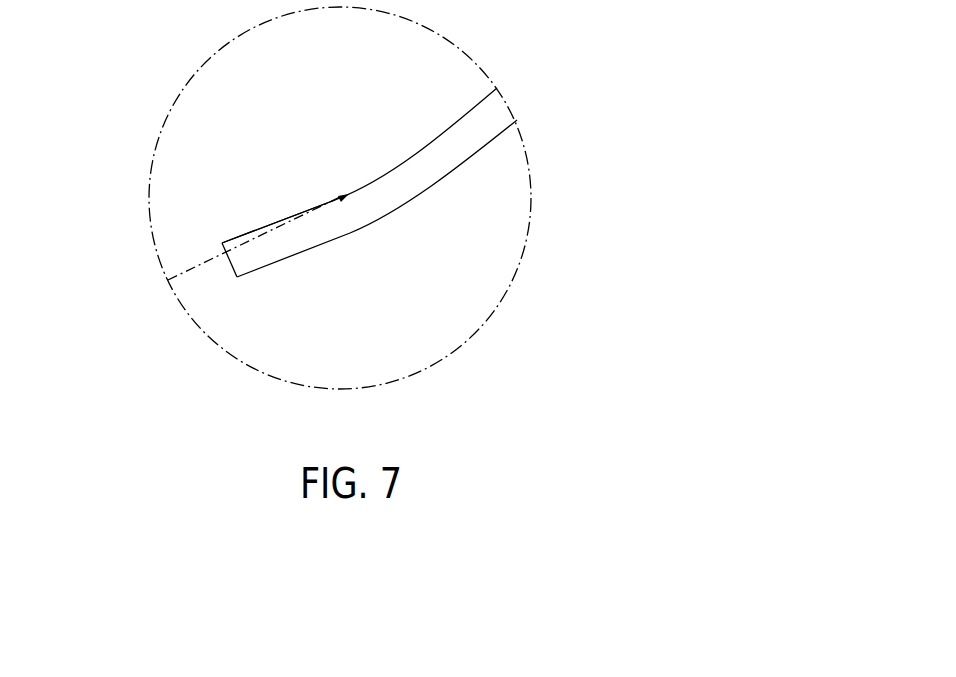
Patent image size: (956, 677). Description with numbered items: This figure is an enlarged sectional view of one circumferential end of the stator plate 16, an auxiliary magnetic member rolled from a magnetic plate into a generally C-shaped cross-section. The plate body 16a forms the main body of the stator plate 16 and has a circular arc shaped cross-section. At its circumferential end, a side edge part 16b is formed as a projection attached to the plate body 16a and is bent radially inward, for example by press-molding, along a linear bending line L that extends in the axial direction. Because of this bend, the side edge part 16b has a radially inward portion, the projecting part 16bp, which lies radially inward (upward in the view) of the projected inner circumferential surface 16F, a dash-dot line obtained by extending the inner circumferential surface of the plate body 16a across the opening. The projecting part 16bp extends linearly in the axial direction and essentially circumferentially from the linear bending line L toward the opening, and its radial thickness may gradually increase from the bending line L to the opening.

The stator plate 16 is at (344, 264).
The plate body 16a is at (465, 140).
The side edge part 16b is at (300, 240).
The projecting part 16bp is at (224, 242).
The projected inner circumferential surface 16F is at (270, 238).
The linear bending line L is at (372, 225).